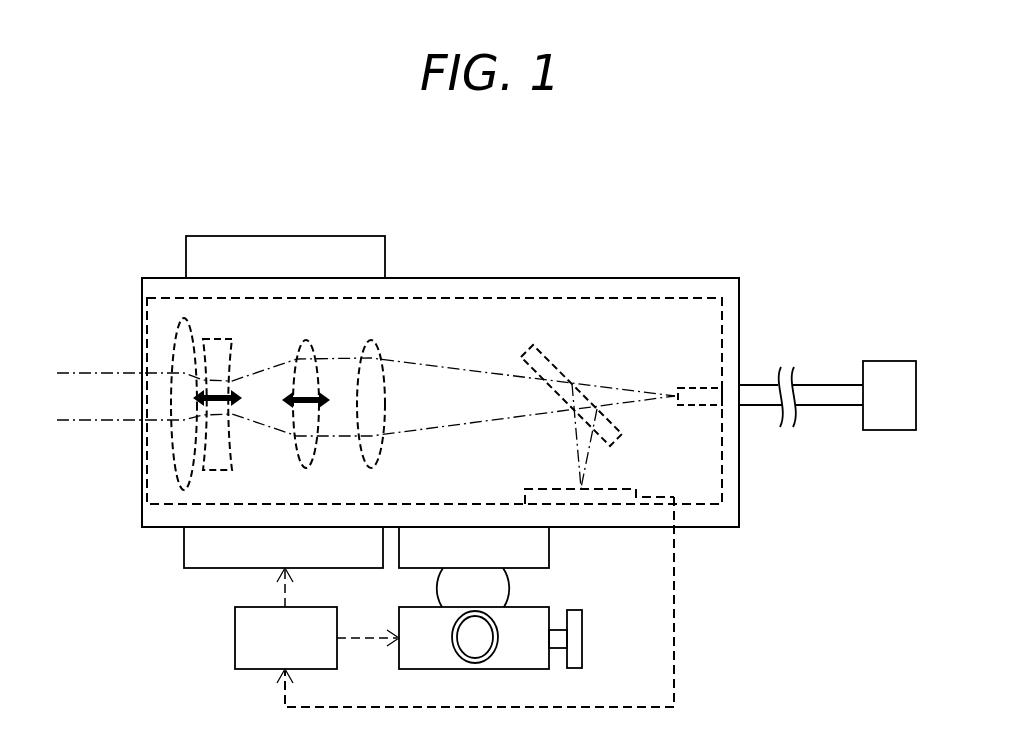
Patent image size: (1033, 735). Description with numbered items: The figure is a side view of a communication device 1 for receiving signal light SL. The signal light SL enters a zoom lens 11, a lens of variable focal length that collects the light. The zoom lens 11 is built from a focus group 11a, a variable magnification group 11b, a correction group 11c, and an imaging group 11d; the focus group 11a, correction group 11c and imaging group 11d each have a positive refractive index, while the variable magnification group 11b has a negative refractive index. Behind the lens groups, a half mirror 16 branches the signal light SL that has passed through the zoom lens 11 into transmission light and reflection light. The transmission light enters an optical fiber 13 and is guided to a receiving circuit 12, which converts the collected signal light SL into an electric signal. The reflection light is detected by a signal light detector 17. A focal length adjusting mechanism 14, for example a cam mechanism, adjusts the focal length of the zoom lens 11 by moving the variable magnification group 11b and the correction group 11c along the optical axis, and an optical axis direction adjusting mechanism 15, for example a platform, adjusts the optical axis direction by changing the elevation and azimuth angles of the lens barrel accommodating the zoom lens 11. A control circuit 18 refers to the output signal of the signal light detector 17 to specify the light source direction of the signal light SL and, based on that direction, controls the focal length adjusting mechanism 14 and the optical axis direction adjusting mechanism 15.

The communication device 1 is at (884, 216).
The zoom lens 11 is at (307, 401).
The focus group 11a is at (194, 333).
The variable magnification group 11b is at (230, 356).
The correction group 11c is at (315, 343).
The imaging group 11d is at (379, 345).
The receiving circuit 12 is at (890, 360).
The optical fiber 13 is at (692, 387).
The focal length adjusting mechanism 14 is at (284, 235).
The optical axis direction adjusting mechanism 15 is at (508, 586).
The half mirror 16 is at (541, 350).
The signal light detector 17 is at (540, 488).
The control circuit 18 is at (233, 641).
The signal light SL is at (105, 371).